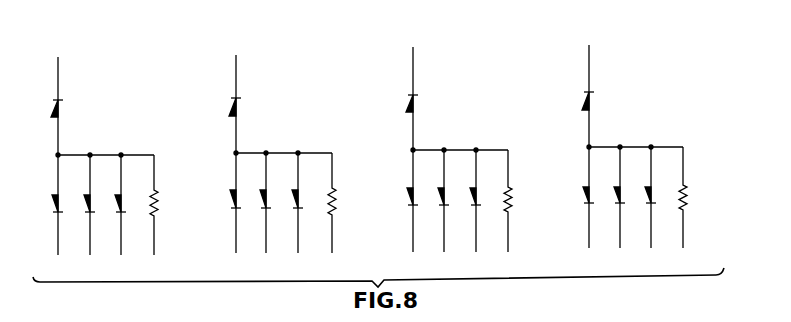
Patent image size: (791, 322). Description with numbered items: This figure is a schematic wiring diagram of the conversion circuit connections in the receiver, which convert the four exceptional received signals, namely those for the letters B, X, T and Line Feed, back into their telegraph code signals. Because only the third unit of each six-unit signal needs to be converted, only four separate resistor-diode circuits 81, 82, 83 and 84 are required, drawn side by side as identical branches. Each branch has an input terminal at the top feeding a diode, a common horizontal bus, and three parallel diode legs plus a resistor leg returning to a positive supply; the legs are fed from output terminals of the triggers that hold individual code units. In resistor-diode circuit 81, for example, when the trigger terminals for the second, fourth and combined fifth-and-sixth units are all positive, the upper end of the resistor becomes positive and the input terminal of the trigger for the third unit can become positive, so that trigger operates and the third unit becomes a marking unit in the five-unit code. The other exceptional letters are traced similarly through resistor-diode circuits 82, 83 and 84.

The resistor-diode circuit 81 is at (118, 157).
The resistor-diode circuit 82 is at (295, 154).
The resistor-diode circuit 83 is at (471, 151).
The resistor-diode circuit 84 is at (647, 147).